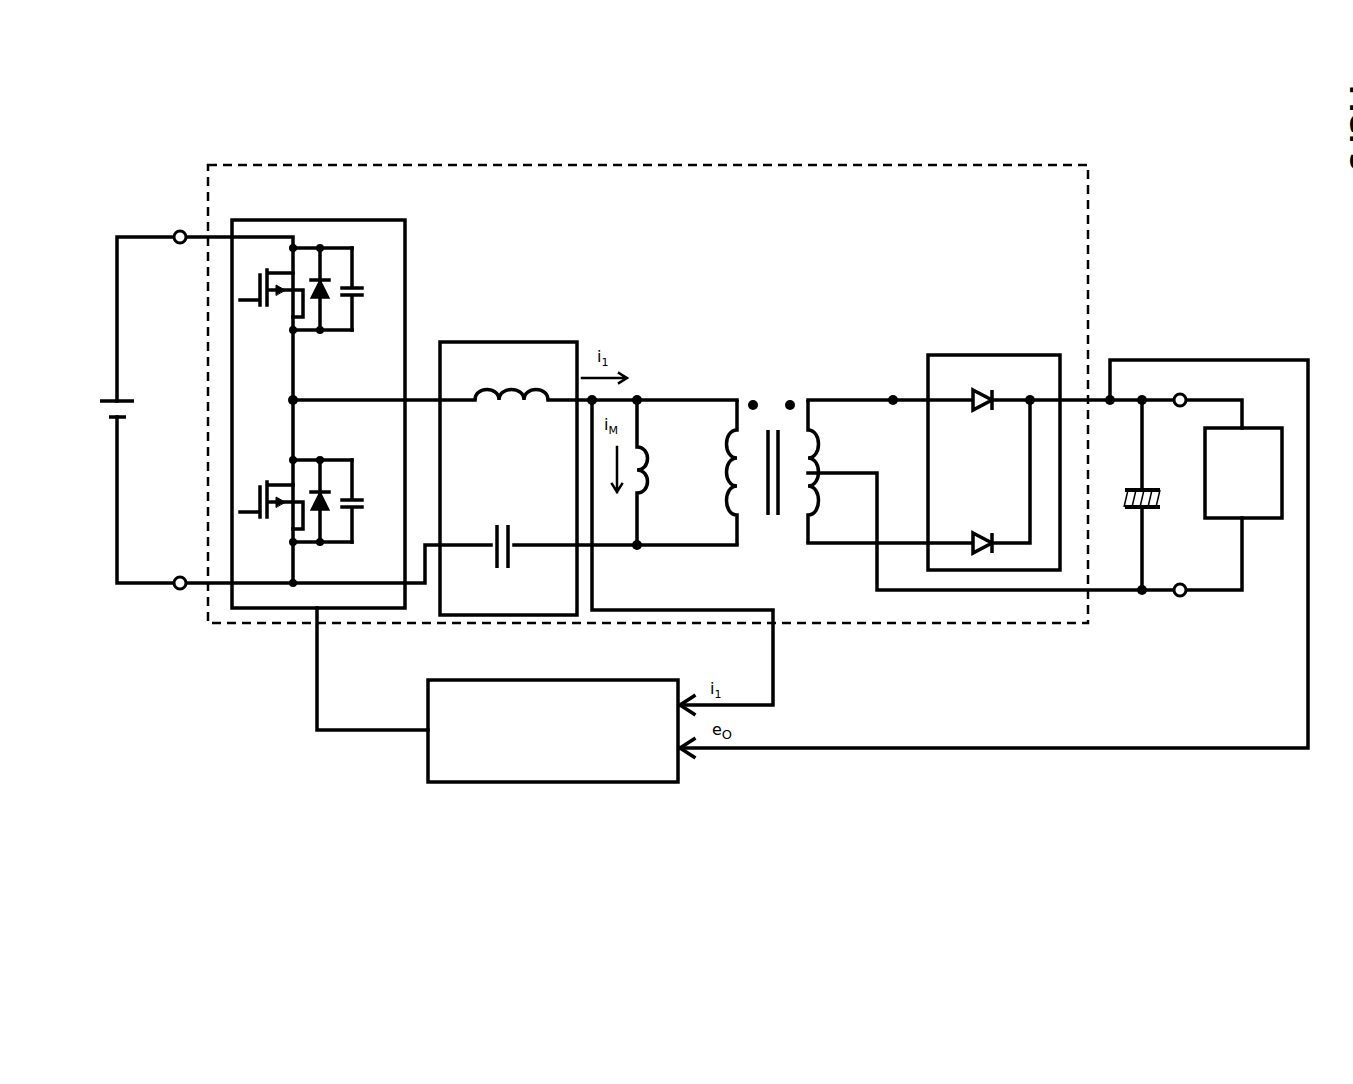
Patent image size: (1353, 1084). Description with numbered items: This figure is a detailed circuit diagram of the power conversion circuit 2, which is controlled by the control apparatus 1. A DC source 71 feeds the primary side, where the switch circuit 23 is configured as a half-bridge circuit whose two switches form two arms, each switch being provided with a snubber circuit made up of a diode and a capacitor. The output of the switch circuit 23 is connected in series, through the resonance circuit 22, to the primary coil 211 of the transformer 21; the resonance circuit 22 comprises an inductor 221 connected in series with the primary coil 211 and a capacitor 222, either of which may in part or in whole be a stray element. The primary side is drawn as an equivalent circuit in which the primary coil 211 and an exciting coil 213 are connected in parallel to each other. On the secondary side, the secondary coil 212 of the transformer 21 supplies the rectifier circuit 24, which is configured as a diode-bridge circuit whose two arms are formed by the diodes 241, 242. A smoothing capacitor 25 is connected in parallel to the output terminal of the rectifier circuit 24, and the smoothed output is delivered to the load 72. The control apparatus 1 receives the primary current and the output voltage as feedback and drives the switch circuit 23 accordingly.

The control apparatus 1 is at (514, 680).
The power conversion circuit 2 is at (648, 380).
The transformer 21 is at (741, 463).
The primary coil 211 is at (724, 480).
The secondary coil 212 is at (804, 520).
The exciting coil 213 is at (646, 453).
The resonance circuit 22 is at (508, 454).
The inductor 221 is at (508, 412).
The capacitor 222 is at (505, 570).
The switch circuit 23 is at (284, 220).
The rectifier circuit 24 is at (994, 443).
The diode 241 is at (987, 412).
The diode 242 is at (991, 533).
The smoothing capacitor 25 is at (1124, 497).
The DC power supply 71 is at (110, 415).
The load 72 is at (1256, 428).